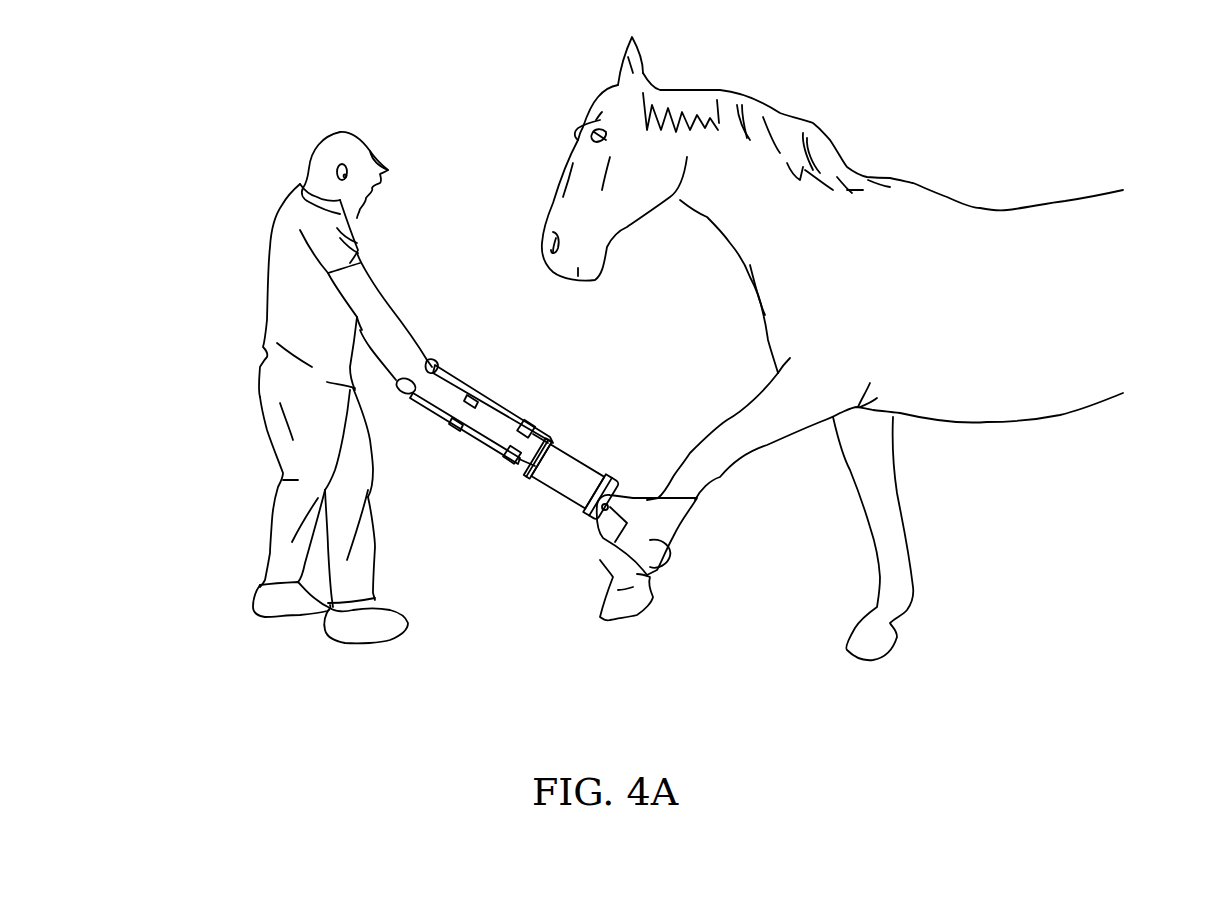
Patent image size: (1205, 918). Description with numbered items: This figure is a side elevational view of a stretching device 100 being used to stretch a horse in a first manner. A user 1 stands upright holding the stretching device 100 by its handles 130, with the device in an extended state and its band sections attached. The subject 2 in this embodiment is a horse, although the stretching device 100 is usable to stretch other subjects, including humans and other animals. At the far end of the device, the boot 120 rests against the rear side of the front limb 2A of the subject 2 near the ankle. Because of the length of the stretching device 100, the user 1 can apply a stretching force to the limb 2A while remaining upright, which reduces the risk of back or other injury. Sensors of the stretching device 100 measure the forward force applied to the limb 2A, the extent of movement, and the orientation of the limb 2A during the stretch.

The user 1 is at (280, 552).
The subject 2 is at (1010, 390).
The front limb 2A is at (627, 600).
The stretching device 100 is at (558, 488).
The boot 120 is at (680, 523).
The handles 130 is at (435, 367).